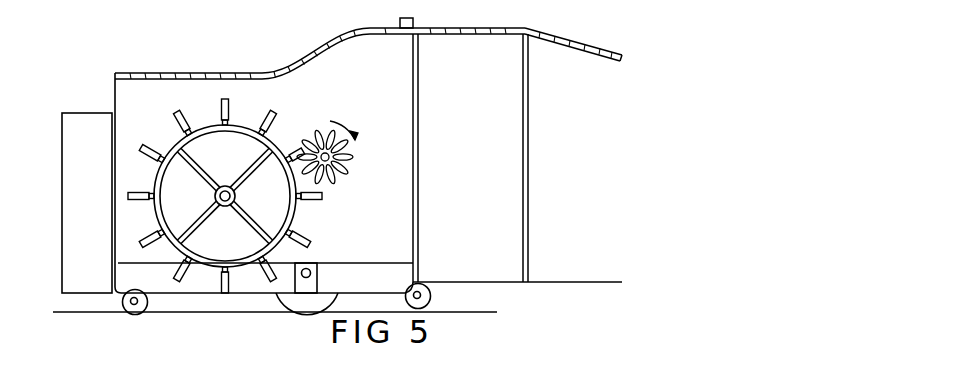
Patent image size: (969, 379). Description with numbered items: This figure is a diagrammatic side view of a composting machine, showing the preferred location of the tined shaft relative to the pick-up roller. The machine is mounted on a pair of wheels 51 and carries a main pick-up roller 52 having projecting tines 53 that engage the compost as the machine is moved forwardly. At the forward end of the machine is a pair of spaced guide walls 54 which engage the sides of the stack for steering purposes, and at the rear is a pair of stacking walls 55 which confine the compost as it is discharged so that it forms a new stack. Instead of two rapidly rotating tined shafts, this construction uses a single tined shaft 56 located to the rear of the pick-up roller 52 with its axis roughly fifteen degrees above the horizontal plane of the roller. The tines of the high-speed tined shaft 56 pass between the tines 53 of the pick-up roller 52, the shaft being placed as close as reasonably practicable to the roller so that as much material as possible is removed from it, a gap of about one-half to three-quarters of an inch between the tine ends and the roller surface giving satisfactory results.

The wheels 51 is at (300, 302).
The main pick-up roller 52 is at (300, 208).
The projecting tines 53 is at (262, 120).
The guide walls 54 is at (72, 146).
The rear stacking walls 55 is at (481, 126).
The tined shaft 56 is at (345, 127).